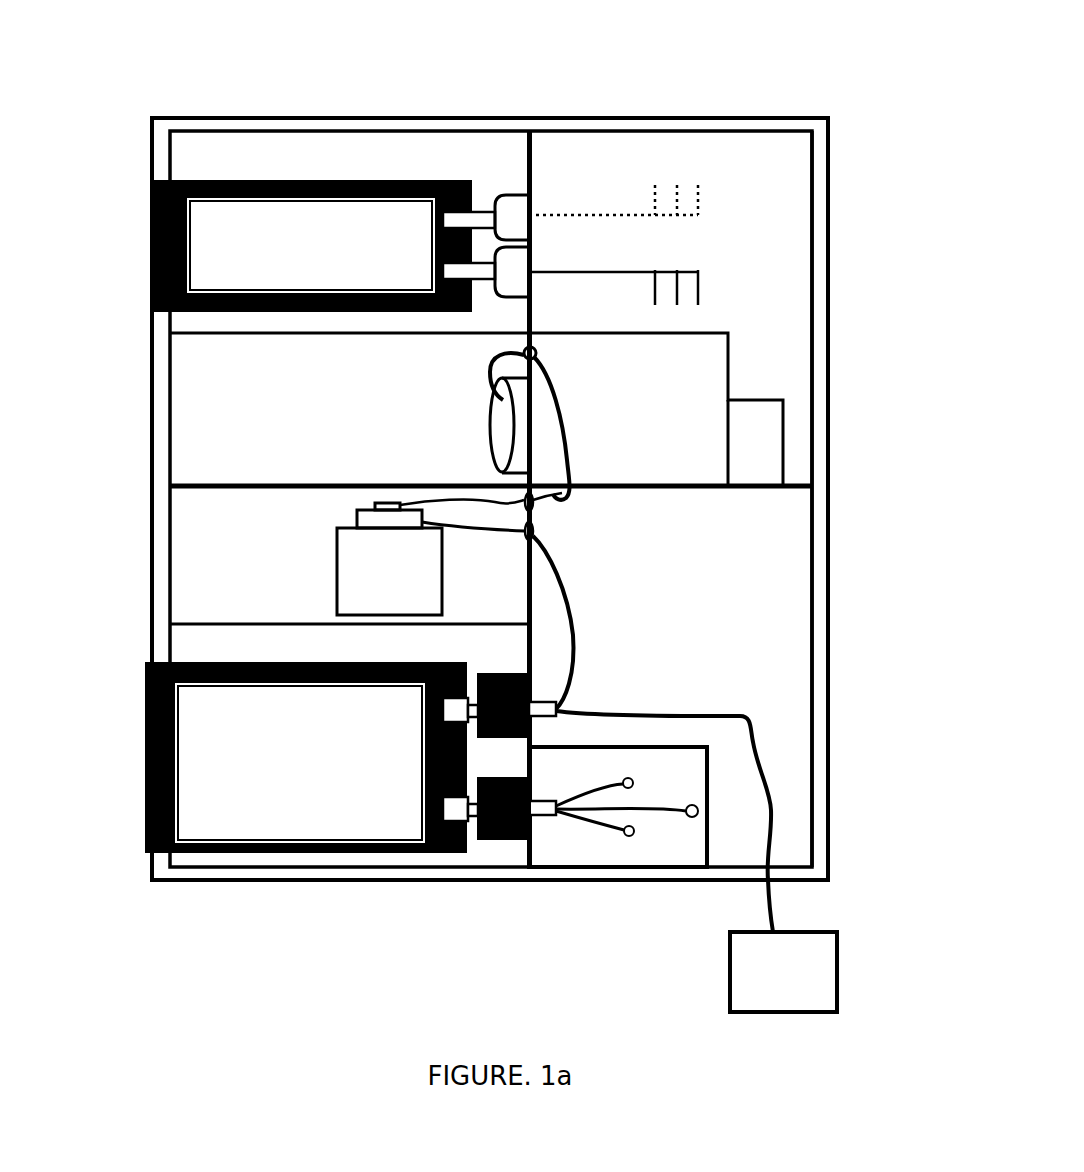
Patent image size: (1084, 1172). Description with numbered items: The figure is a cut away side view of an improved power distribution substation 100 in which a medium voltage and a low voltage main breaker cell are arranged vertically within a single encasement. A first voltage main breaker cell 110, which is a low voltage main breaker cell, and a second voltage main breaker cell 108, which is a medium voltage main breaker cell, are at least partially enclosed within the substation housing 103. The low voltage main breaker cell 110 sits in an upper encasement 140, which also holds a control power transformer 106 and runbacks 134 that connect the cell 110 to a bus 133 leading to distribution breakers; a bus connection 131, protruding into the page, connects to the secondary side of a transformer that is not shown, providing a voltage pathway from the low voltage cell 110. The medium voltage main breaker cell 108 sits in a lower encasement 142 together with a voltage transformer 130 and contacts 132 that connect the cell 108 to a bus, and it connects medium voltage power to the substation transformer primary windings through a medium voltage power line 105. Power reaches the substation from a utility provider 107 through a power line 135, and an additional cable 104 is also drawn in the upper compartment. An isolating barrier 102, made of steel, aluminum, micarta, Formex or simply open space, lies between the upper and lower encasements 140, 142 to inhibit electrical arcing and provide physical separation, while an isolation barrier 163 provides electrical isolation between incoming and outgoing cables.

The power distribution substation 100 is at (152, 956).
The isolating barrier 102 is at (670, 490).
The substation housing 103 is at (353, 880).
The cable 104 is at (558, 383).
The medium voltage power line 105 is at (675, 880).
The control power transformer 106 is at (487, 435).
The utility provider 107 is at (837, 957).
The second voltage main breaker cell 108 is at (152, 730).
The first voltage main breaker cell 110 is at (152, 243).
The voltage transformer 130 is at (337, 545).
The bus connection 131 is at (698, 200).
The contacts 132 is at (510, 832).
The bus 133 is at (698, 290).
The runbacks 134 is at (517, 197).
The power line 135 is at (753, 722).
The upper encasement 140 is at (739, 131).
The lower encasement 142 is at (812, 818).
The isolation barrier 163 is at (707, 777).